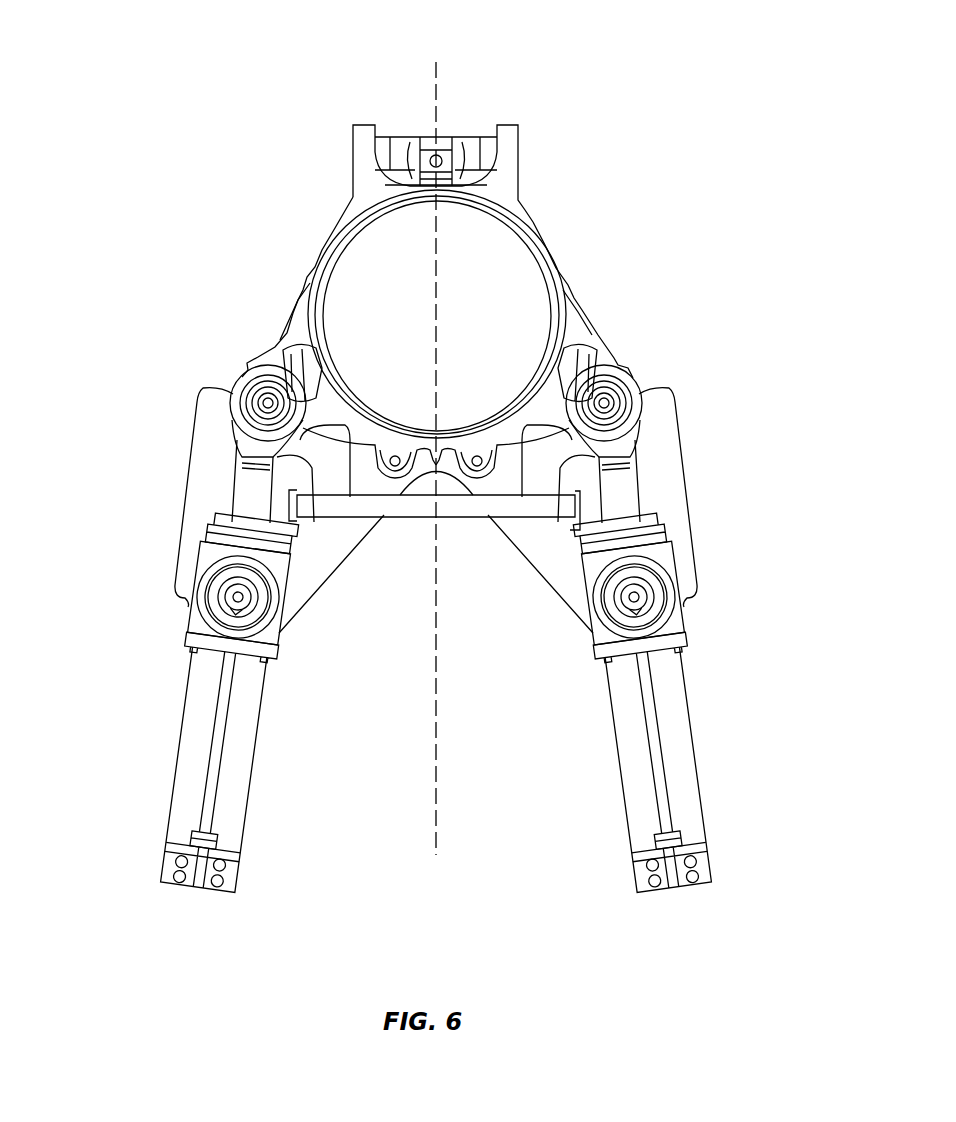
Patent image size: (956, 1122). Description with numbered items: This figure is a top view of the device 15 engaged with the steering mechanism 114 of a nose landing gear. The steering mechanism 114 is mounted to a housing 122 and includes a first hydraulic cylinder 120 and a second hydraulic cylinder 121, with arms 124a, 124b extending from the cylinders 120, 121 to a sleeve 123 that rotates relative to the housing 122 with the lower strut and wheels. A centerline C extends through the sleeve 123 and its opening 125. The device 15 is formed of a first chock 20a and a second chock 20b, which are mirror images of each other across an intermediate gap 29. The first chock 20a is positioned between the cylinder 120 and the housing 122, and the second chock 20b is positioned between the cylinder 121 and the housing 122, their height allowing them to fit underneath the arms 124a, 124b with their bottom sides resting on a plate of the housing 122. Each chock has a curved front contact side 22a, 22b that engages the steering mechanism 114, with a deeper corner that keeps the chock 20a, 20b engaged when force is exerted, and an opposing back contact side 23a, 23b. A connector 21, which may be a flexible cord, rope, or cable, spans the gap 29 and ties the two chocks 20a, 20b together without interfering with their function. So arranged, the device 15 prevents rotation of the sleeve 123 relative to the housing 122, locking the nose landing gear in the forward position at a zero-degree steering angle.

The centerline C is at (438, 82).
The steering mechanism 114 is at (594, 196).
The sleeve 123 is at (330, 258).
The opening 125 is at (509, 296).
The housing 122 is at (288, 328).
The device 15 is at (166, 408).
The front contact side 22a is at (227, 387).
The front contact side 22b is at (656, 386).
The arm 124a is at (258, 486).
The arm 124b is at (612, 487).
The first chock 20a is at (205, 500).
The second chock 20b is at (668, 498).
The back contact side 23a is at (176, 590).
The back contact side 23b is at (694, 600).
The connector 21 is at (471, 507).
The gap 29 is at (468, 628).
The first hydraulic cylinder 120 is at (190, 767).
The second hydraulic cylinder 121 is at (678, 750).